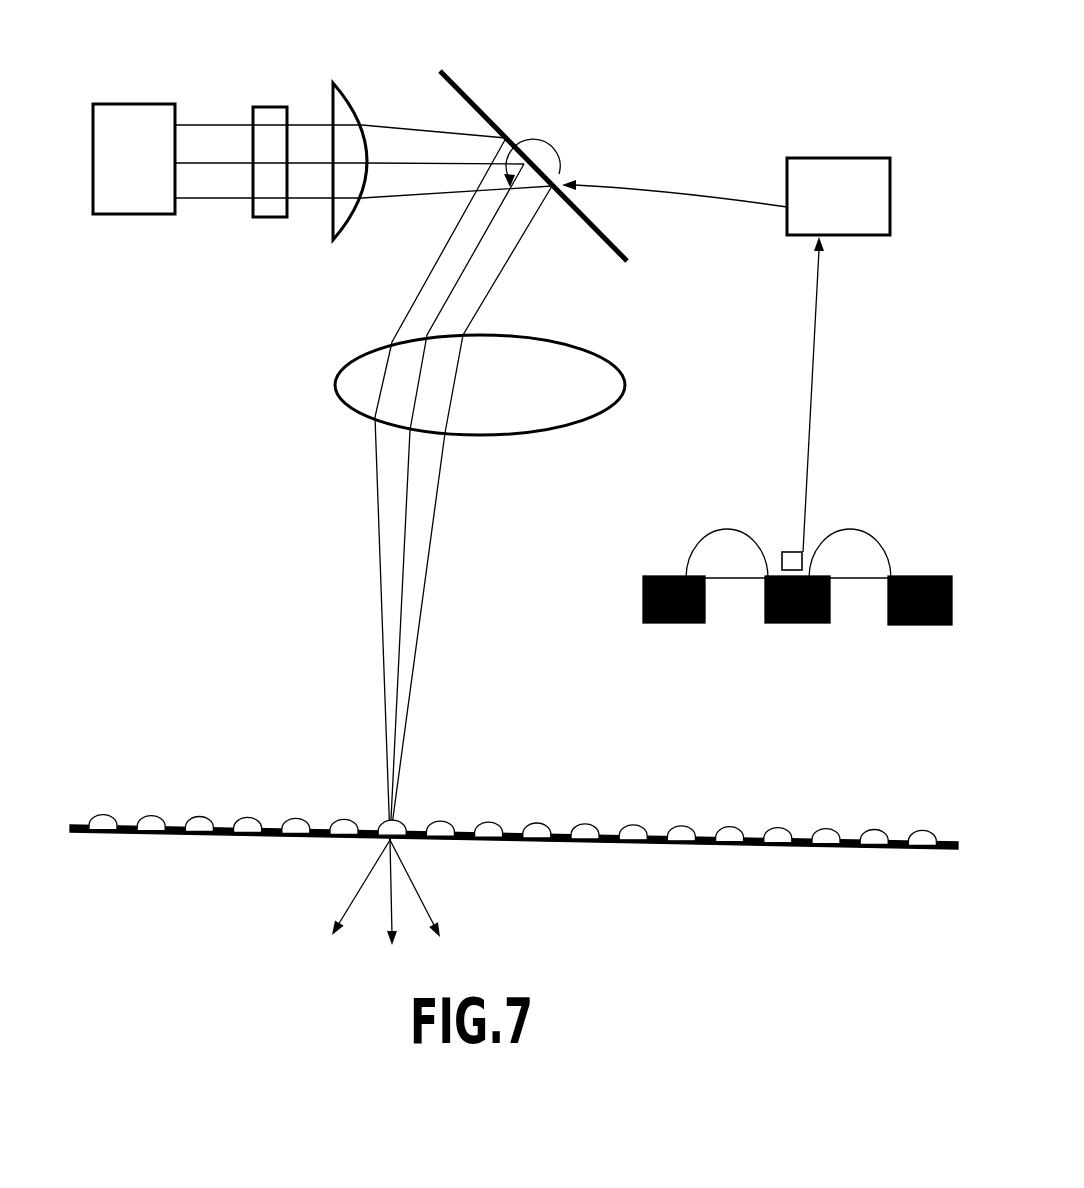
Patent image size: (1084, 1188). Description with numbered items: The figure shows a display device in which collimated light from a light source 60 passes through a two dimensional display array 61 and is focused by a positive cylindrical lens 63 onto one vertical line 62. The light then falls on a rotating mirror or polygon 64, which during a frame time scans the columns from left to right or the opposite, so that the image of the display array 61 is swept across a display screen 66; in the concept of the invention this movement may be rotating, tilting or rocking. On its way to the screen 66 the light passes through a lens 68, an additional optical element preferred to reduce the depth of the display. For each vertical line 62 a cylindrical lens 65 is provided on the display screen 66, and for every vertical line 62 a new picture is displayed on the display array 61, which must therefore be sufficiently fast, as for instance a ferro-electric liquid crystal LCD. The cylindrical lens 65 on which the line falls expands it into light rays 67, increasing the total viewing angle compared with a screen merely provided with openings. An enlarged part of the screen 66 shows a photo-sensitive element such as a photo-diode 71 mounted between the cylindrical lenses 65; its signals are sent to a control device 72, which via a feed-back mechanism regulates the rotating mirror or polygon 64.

The light source 60 is at (133, 104).
The two dimensional display array 61 is at (268, 107).
The vertical line 62 is at (380, 763).
The positive cylindrical lens 63 is at (337, 83).
The rotating mirror or polygon 64 is at (643, 191).
The cylindrical lens 65 is at (105, 817).
The display screen 66 is at (682, 843).
The light rays 67 is at (386, 912).
The lens 68 is at (625, 385).
The photo-diode 71 is at (791, 552).
The control device 72 is at (838, 158).